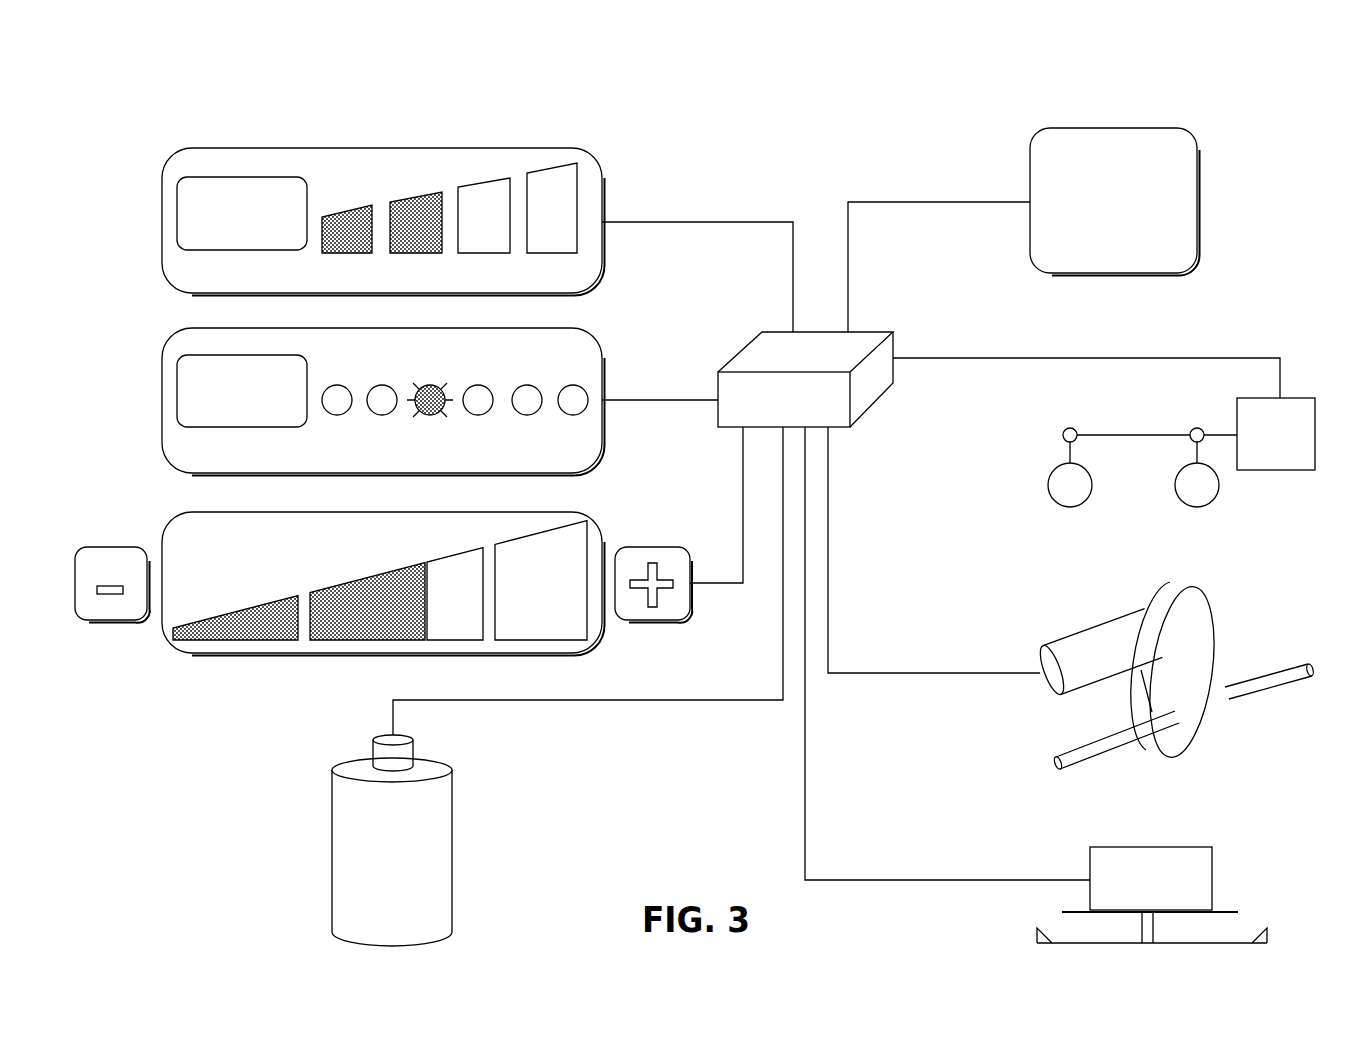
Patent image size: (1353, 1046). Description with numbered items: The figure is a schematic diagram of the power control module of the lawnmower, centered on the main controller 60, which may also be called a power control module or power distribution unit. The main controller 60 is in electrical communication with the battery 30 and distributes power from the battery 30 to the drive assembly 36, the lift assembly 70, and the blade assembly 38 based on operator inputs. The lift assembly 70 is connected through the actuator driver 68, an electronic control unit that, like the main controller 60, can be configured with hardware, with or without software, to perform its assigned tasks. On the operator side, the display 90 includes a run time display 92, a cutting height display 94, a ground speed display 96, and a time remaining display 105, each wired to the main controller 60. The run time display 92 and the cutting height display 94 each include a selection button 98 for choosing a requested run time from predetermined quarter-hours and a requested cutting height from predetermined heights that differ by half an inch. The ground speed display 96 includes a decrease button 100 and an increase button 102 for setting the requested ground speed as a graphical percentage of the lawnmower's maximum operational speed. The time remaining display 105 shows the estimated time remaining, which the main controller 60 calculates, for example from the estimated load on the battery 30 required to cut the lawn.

The display 90 is at (130, 127).
The run time display 92 is at (162, 250).
The cutting height display 94 is at (162, 436).
The ground speed display 96 is at (186, 655).
The selection button 98 is at (214, 246).
The decrease button 100 is at (118, 622).
The increase button 102 is at (652, 622).
The time remaining display 105 is at (1030, 160).
The main controller 60 is at (875, 395).
The actuator driver 68 is at (1303, 398).
The lift assembly 70 is at (1022, 455).
The drive assembly 36 is at (1262, 590).
The blade assembly 38 is at (1265, 866).
The battery 30 is at (448, 862).